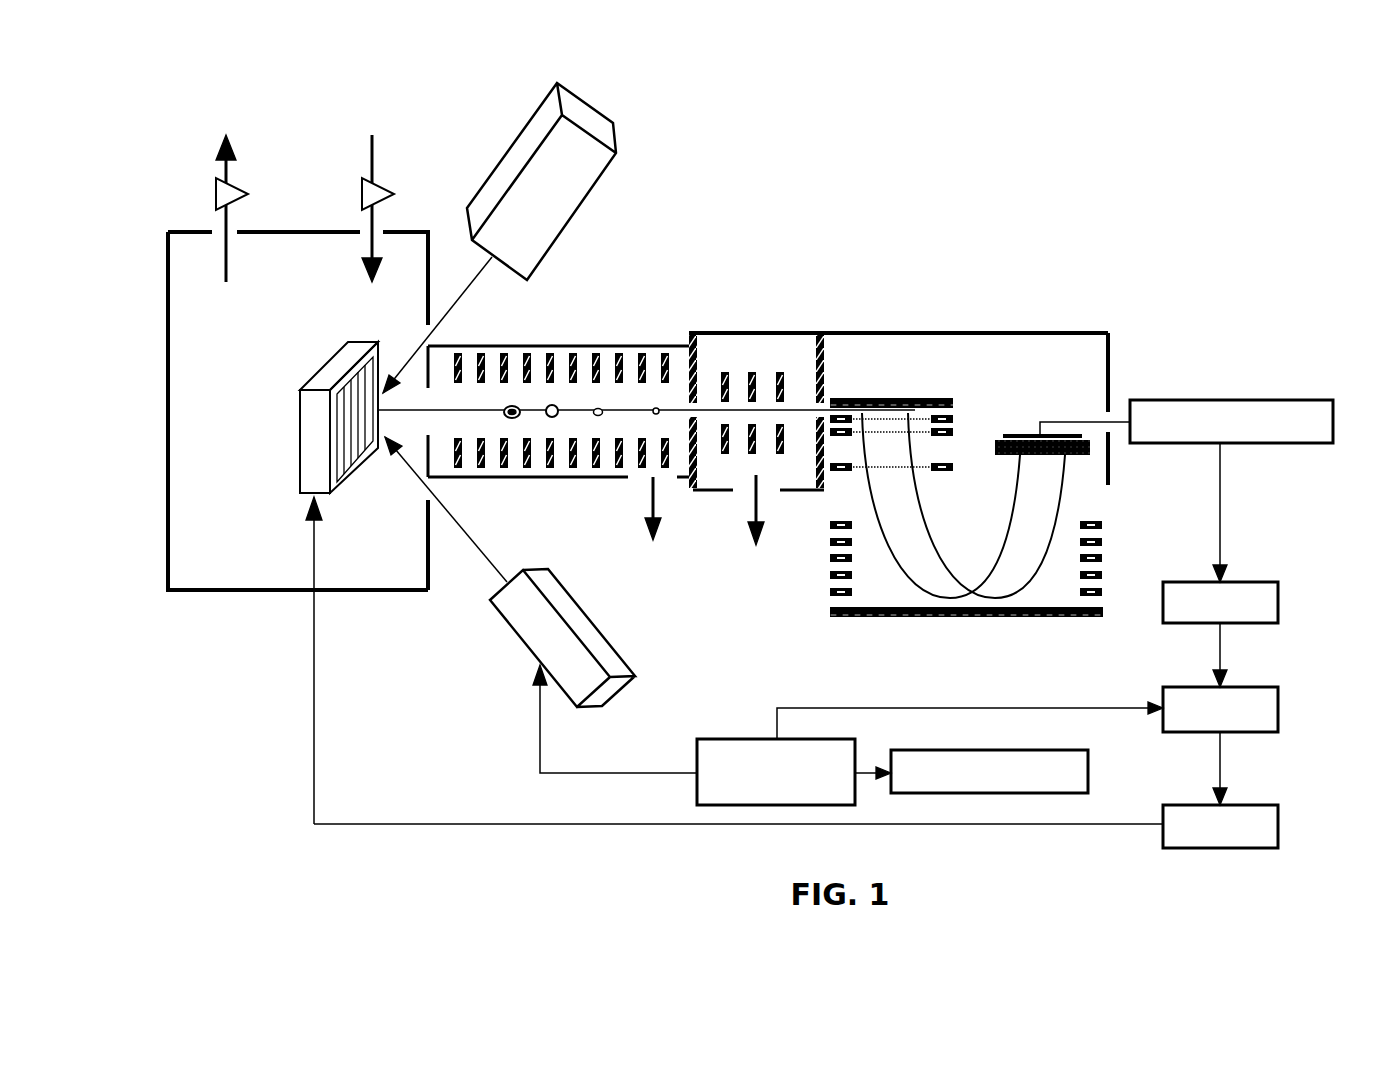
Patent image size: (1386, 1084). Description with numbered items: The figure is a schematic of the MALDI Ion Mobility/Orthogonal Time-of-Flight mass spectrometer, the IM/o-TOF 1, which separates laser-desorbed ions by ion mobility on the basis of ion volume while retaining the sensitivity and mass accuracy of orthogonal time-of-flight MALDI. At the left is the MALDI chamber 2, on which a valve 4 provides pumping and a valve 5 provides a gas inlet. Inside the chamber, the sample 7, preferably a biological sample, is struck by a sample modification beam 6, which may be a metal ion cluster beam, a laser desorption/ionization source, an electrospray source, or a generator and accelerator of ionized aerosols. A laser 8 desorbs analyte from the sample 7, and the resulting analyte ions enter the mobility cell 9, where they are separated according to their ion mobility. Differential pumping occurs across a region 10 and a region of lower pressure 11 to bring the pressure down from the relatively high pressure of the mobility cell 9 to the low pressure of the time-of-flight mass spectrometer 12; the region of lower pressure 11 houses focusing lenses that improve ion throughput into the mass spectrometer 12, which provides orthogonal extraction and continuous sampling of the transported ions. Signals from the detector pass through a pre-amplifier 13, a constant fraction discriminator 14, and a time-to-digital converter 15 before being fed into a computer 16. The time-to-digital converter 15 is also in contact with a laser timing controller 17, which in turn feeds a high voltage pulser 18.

The IM/o-TOF 1 is at (855, 320).
The MALDI chamber 2 is at (300, 423).
The valve 4 is at (208, 195).
The valve 5 is at (356, 195).
The sample modification beam 6 is at (628, 137).
The sample 7 is at (360, 478).
The laser 8 is at (618, 643).
The mobility cell 9 is at (577, 335).
The region 10 is at (637, 480).
The region of lower pressure 11 is at (739, 497).
The time-of-flight mass spectrometer 12 is at (1048, 327).
The pre-amplifier 13 is at (1240, 390).
The constant fraction discriminator 14 is at (1263, 578).
The time-to-digital converter 15 is at (1272, 678).
The computer 16 is at (1260, 800).
The laser timing controller 17 is at (730, 730).
The high voltage pulser 18 is at (1090, 771).